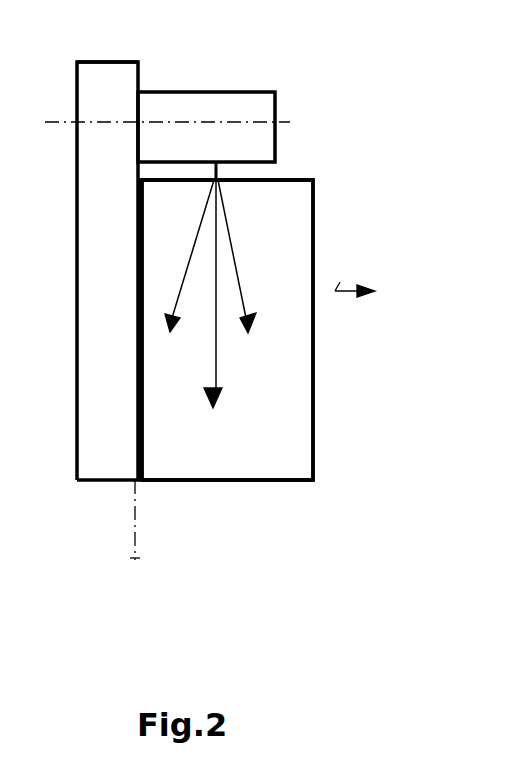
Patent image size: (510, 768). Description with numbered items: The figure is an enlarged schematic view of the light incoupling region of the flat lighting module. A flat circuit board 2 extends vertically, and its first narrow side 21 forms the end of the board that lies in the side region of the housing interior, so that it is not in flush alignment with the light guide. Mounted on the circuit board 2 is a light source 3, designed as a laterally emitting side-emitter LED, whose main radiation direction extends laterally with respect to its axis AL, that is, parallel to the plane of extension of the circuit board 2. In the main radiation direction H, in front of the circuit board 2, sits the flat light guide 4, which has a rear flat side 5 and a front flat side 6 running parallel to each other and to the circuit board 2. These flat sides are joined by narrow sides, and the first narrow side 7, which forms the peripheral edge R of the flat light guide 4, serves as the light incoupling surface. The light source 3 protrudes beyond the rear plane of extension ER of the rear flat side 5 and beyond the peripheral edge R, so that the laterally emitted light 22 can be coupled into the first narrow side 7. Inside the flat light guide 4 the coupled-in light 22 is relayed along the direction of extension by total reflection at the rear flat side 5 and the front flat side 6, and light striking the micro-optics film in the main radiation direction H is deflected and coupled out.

The flat circuit board 2 is at (98, 403).
The first narrow side of the circuit board 21 is at (110, 62).
The light source 3 is at (198, 107).
The flat light guide 4 is at (265, 462).
The rear flat side 5 is at (145, 440).
The front flat side 6 is at (315, 375).
The first narrow side 7 is at (275, 178).
The laterally emitted light 22 is at (215, 260).
The peripheral edge R is at (300, 179).
The main radiation direction H is at (355, 269).
The axis of the light source AL is at (57, 118).
The rear plane of extension ER is at (133, 556).